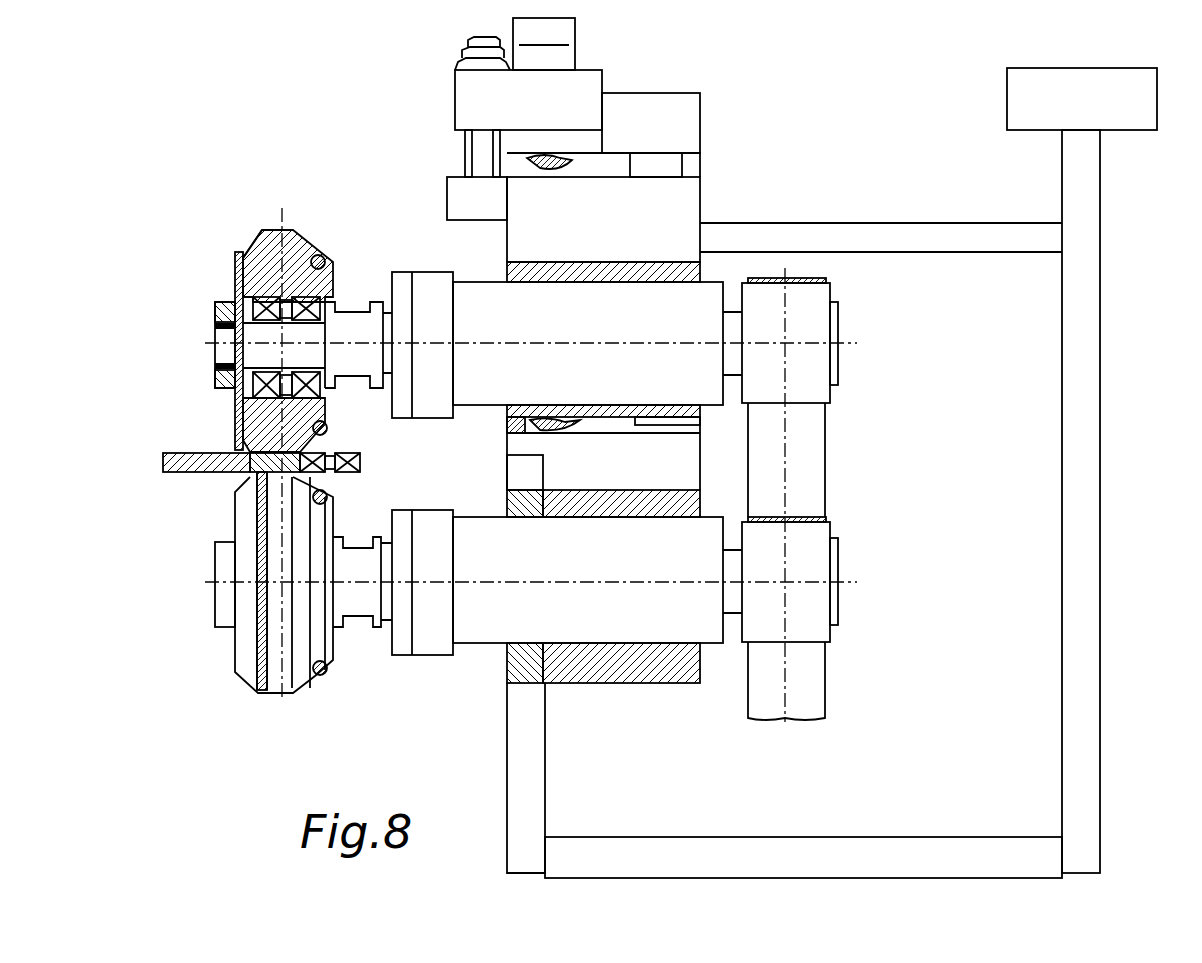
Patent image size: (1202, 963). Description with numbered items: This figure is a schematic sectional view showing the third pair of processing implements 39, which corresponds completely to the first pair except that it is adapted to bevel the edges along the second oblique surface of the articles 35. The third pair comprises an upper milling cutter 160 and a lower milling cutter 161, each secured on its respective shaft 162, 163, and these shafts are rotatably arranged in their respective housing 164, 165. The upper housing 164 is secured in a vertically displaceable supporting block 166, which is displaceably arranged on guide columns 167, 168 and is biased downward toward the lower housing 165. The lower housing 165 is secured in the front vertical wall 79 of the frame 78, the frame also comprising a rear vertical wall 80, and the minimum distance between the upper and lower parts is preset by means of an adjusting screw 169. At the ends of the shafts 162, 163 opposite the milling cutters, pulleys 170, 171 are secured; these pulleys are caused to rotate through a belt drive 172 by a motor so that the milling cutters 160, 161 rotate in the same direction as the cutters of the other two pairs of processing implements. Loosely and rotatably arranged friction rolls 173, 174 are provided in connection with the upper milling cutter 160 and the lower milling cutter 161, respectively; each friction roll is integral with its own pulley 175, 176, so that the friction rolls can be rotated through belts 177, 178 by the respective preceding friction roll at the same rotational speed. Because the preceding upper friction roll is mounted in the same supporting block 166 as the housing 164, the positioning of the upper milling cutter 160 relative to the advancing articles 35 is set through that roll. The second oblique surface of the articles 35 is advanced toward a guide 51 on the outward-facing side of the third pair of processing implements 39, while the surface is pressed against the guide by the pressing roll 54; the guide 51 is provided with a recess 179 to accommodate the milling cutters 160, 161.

The articles 35 is at (268, 472).
The third pair of processing implements 39 is at (243, 250).
The guide 51 is at (185, 465).
The pressing roll 54 is at (333, 455).
The frame 78 is at (545, 802).
The front vertical wall 79 is at (523, 768).
The rear vertical wall 80 is at (1082, 768).
The upper milling cutter 160 is at (240, 285).
The lower milling cutter 161 is at (247, 668).
The shaft 162 is at (240, 352).
The shaft 163 is at (737, 600).
The housing 164 is at (476, 300).
The housing 165 is at (487, 625).
The supporting block 166 is at (672, 210).
The guide column 167 is at (580, 162).
The guide column 168 is at (672, 160).
The adjusting screw 169 is at (478, 156).
The pulley 170 is at (808, 322).
The pulley 171 is at (810, 560).
The belt drive 172 is at (810, 470).
The friction roll 173 is at (288, 240).
The friction roll 174 is at (300, 668).
The pulley 175 is at (330, 303).
The pulley 176 is at (362, 558).
The belt 177 is at (322, 256).
The belt 178 is at (327, 490).
The recess 179 is at (245, 462).